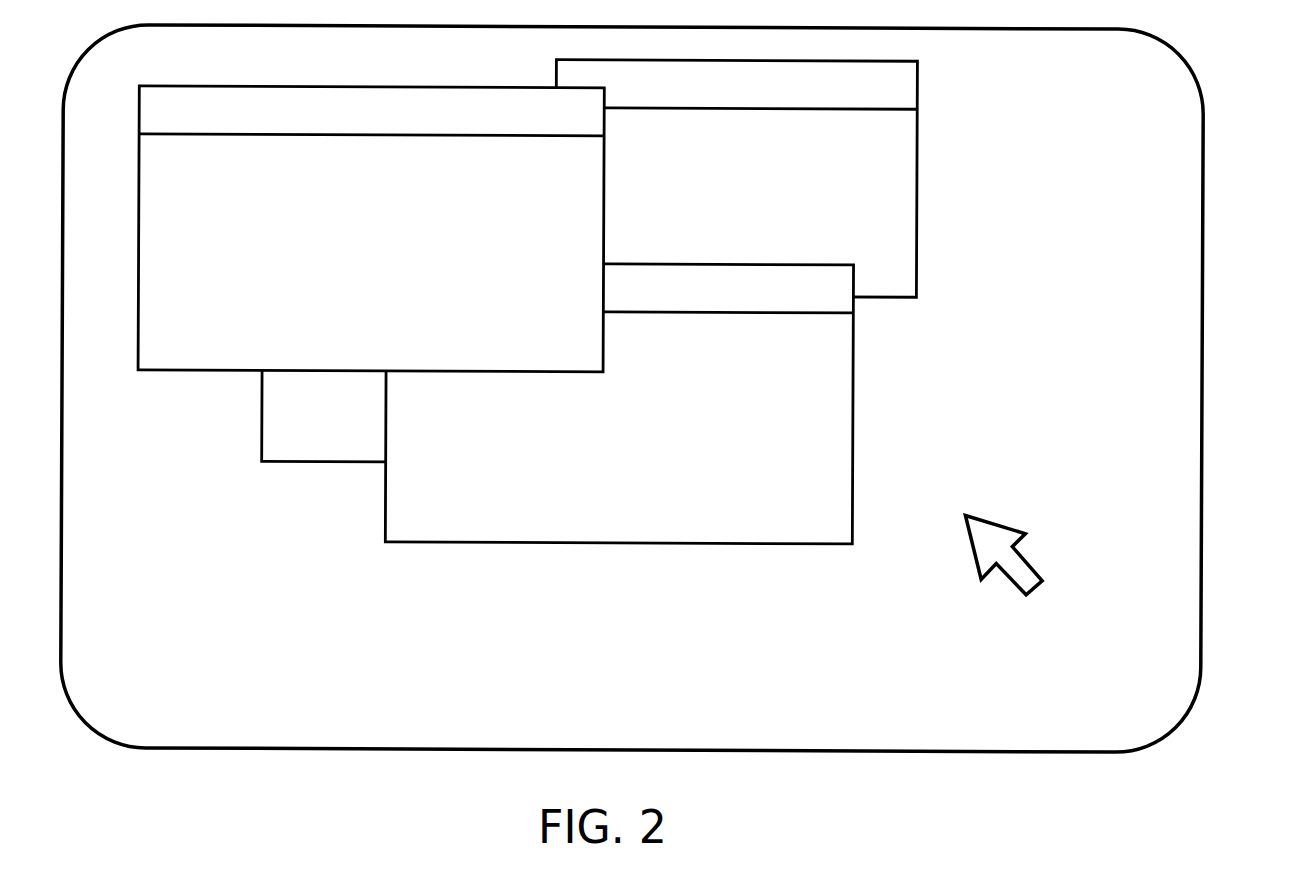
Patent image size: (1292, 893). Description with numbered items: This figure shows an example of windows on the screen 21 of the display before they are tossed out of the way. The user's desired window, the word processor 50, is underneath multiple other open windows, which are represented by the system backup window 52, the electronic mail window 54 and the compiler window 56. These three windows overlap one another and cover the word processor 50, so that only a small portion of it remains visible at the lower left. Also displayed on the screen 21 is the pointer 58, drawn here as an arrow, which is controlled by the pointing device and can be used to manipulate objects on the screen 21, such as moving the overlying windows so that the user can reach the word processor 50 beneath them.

The screen 21 is at (1195, 82).
The word processor window 50 is at (262, 463).
The system backup window 52 is at (138, 117).
The electronic mail window 54 is at (916, 118).
The compiler window 56 is at (828, 545).
The pointer 58 is at (1007, 578).